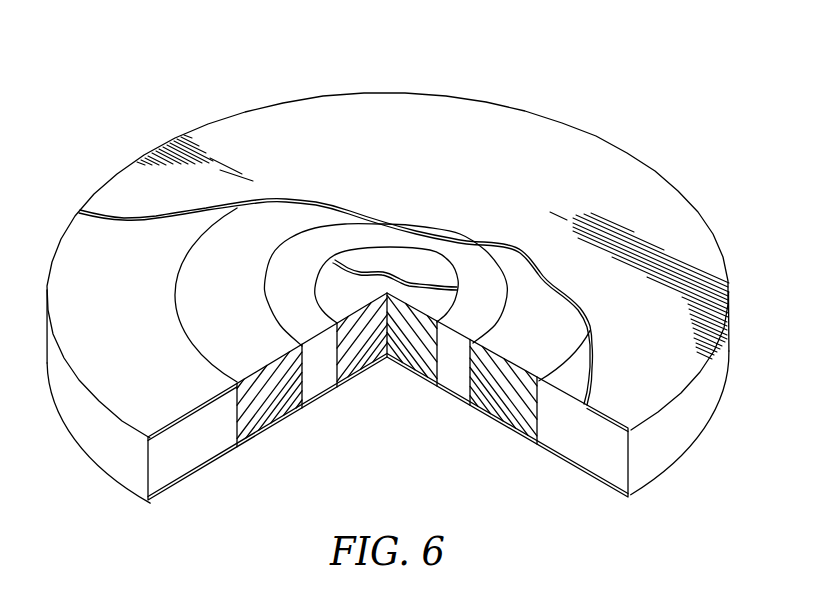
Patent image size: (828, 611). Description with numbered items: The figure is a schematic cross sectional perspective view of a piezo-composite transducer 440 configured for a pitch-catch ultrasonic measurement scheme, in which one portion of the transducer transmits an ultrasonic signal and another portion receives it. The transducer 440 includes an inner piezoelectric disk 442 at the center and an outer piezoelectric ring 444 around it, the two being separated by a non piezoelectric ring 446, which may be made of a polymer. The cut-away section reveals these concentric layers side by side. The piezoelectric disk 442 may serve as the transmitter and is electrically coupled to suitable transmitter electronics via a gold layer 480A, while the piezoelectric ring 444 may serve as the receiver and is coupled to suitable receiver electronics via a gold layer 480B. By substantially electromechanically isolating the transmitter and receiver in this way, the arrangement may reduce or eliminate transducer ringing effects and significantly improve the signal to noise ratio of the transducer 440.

The transducer 440 is at (560, 83).
The inner piezoelectric disk 442 is at (425, 365).
The outer piezoelectric ring 444 is at (272, 415).
The non piezoelectric ring 446 is at (460, 388).
The gold layer 480A is at (417, 260).
The gold layer 480B is at (117, 195).